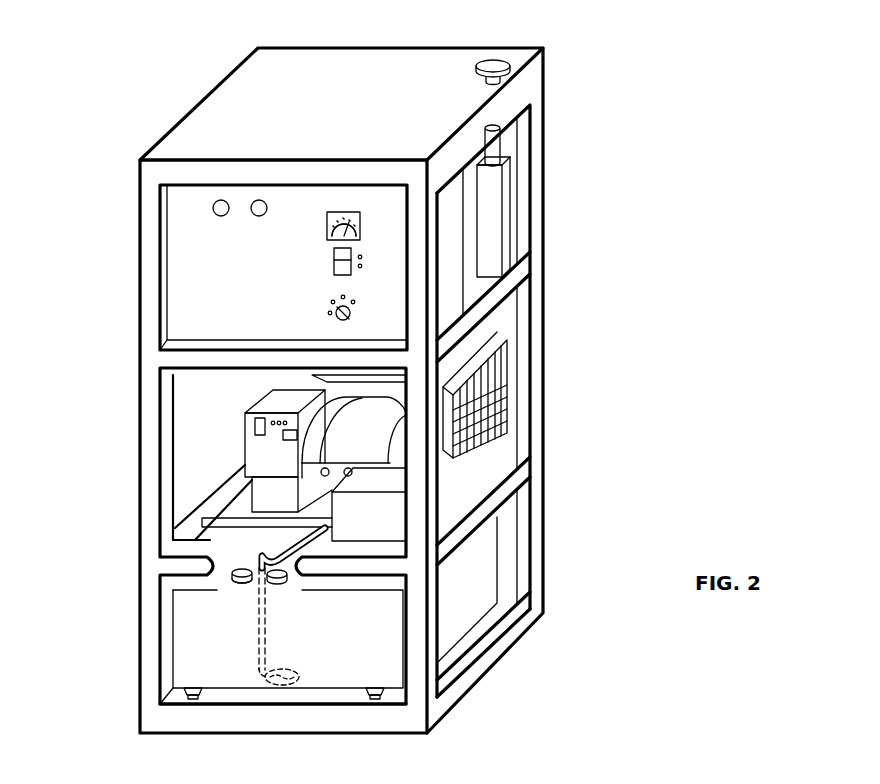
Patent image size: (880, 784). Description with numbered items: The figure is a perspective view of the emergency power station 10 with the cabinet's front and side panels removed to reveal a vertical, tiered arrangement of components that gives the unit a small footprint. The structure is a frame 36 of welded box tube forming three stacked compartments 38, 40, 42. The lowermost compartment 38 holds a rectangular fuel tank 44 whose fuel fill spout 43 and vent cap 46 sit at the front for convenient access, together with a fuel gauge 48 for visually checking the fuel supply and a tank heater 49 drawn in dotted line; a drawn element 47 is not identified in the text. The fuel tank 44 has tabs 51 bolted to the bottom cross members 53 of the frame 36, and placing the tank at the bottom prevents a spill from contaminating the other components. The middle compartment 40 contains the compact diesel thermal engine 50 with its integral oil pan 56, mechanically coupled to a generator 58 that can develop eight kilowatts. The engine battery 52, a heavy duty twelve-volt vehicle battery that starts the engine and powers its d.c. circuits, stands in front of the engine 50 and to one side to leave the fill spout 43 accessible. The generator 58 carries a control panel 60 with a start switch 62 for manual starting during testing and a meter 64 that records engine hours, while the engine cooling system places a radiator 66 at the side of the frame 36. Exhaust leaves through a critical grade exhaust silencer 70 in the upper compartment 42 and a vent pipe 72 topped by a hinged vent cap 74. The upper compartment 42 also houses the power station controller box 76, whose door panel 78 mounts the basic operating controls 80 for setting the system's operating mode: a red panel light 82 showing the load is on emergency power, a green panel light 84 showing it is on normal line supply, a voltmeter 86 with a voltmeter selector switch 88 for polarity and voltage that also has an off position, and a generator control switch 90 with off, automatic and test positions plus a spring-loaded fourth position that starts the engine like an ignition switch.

The emergency power station 10 is at (181, 92).
The frame 36 is at (533, 495).
The lowermost compartment 38 is at (505, 558).
The compartment 40 is at (502, 322).
The upper compartment 42 is at (522, 217).
The fuel fill spout 43 is at (245, 583).
The fuel tank 44 is at (460, 618).
The vent cap 46 is at (235, 576).
The coil 47 is at (300, 673).
The fuel gauge 48 is at (285, 588).
The tank heater 49 is at (257, 555).
The thermal engine 50 is at (216, 455).
The tabs 51 is at (383, 697).
The engine battery 52 is at (356, 531).
The bottom cross members 53 is at (255, 718).
The oil pan 56 is at (232, 517).
The generator 58 is at (268, 386).
The control panel 60 is at (250, 478).
The start switch 62 is at (255, 425).
The meter 64 is at (283, 435).
The radiator 66 is at (512, 365).
The exhaust silencer 70 is at (512, 183).
The vent pipe 72 is at (503, 142).
The hinged vent cap 74 is at (513, 62).
The power station controller box 76 is at (185, 228).
The door panel 78 is at (185, 275).
The operating controls 80 is at (345, 200).
The red panel light 82 is at (266, 202).
The green panel light 84 is at (228, 201).
The voltmeter 86 is at (328, 218).
The voltmeter selector switch 88 is at (334, 258).
The generator control switch 90 is at (334, 309).